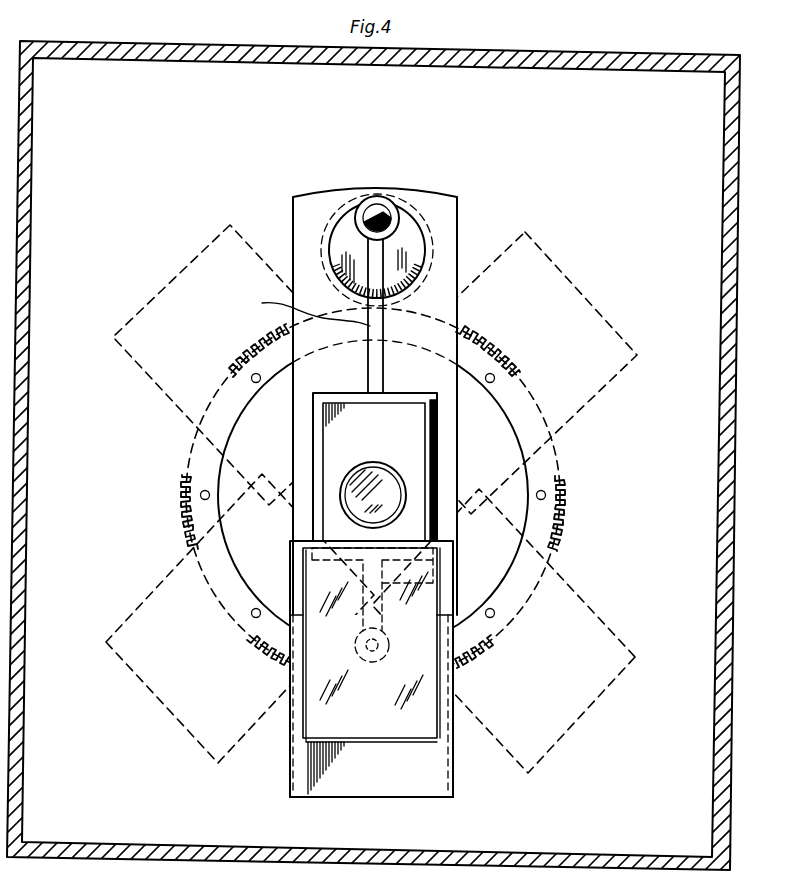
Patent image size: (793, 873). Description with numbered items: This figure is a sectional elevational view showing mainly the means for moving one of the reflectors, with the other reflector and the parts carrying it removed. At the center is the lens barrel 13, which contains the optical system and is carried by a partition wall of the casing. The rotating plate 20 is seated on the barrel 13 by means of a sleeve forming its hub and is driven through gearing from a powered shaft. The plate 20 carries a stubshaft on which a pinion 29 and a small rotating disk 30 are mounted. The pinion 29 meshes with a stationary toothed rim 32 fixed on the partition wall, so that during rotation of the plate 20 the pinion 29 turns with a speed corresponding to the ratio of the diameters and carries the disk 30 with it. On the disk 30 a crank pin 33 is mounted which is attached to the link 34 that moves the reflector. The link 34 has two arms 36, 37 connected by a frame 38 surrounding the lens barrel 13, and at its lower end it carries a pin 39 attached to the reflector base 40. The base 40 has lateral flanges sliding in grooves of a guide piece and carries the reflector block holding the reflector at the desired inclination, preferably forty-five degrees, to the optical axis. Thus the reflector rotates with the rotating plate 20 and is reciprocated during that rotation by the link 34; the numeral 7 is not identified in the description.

The carriage 7 is at (276, 713).
The lens barrel 13 is at (375, 463).
The rotating plate 20 is at (293, 214).
The pinion 29 is at (339, 203).
The small rotating disk 30 is at (410, 228).
The stationary toothed rim 32 is at (490, 345).
The crank pin 33 is at (381, 209).
The link 34 is at (304, 312).
The arm 36 is at (385, 358).
The arm 37 is at (445, 581).
The frame 38 is at (430, 445).
The pin 39 is at (356, 652).
The reflector base 40 is at (437, 745).